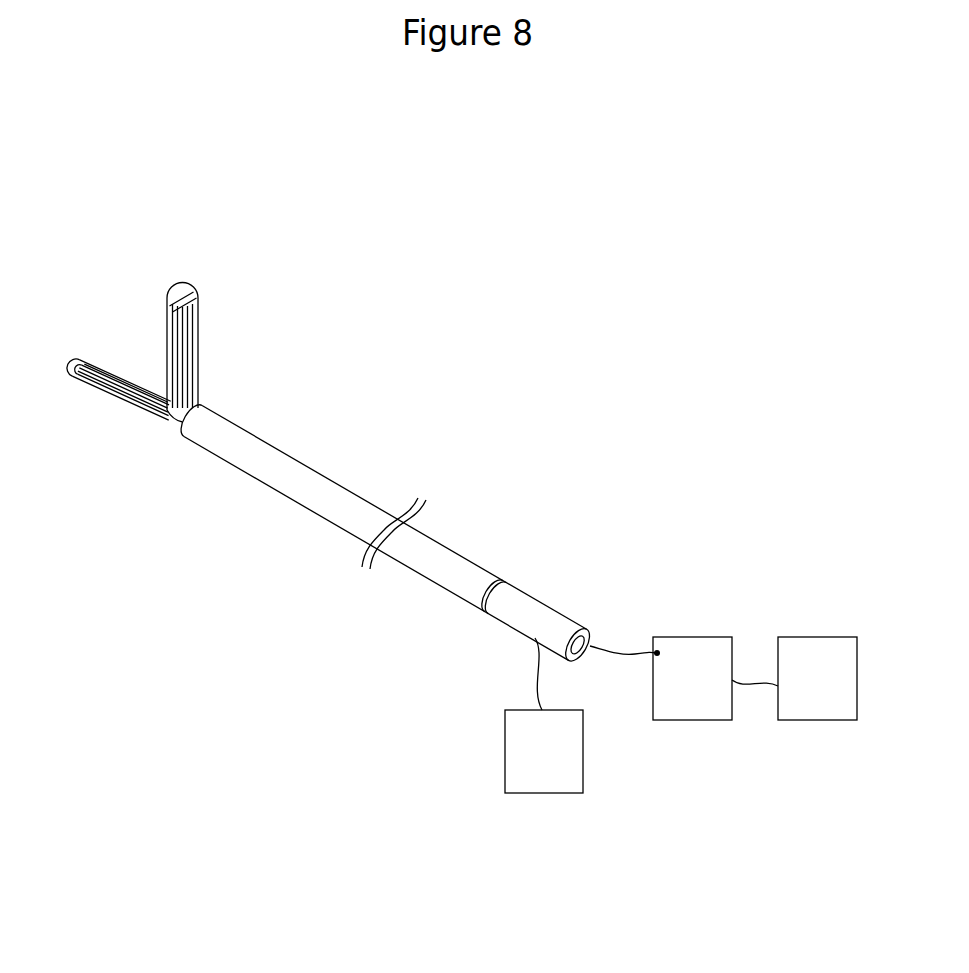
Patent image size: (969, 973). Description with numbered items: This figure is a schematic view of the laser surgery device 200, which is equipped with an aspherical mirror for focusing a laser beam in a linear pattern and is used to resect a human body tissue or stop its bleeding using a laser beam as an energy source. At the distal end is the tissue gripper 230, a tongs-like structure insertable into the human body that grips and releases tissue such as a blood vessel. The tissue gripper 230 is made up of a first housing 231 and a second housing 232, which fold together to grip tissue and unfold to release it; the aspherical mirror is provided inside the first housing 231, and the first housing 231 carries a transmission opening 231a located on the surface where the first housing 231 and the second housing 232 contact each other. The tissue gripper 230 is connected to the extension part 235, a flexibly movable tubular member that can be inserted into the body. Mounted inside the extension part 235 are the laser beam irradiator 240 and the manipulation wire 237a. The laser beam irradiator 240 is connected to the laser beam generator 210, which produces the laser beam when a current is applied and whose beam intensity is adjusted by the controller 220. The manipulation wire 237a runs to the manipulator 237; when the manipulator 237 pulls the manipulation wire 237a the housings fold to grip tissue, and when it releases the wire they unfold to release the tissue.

The laser surgery device 200 is at (329, 474).
The laser beam generator 210 is at (690, 720).
The controller 220 is at (812, 720).
The tissue gripper 230 is at (131, 424).
The first housing 231 is at (107, 400).
The transmission opening 231a is at (130, 410).
The second housing 232 is at (170, 430).
The extension part 235 is at (427, 563).
The manipulator 237 is at (505, 758).
The manipulation wire 237a is at (535, 668).
The laser beam irradiator 240 is at (622, 648).